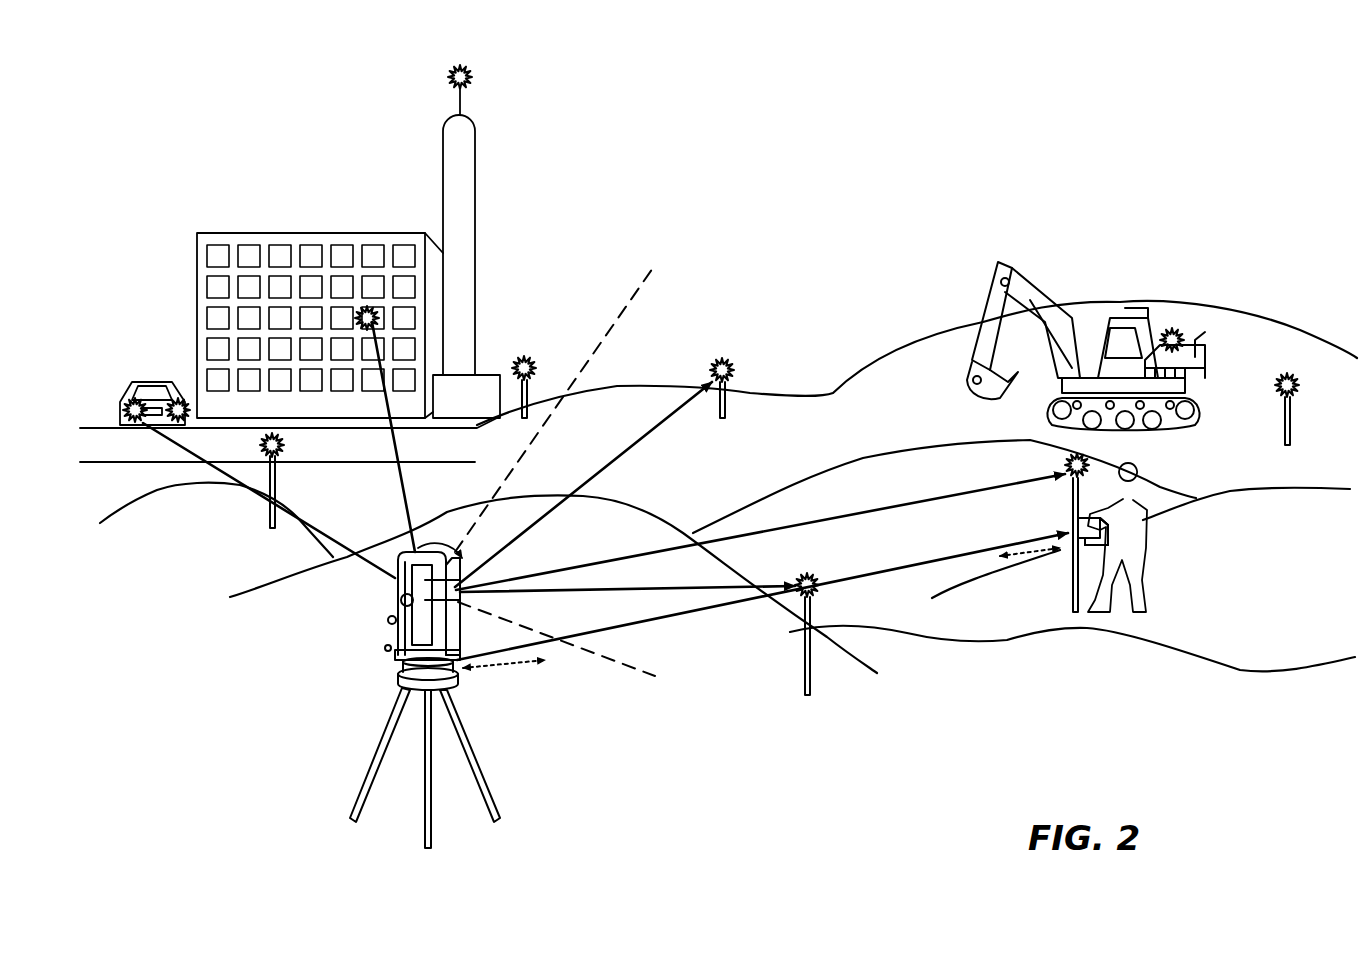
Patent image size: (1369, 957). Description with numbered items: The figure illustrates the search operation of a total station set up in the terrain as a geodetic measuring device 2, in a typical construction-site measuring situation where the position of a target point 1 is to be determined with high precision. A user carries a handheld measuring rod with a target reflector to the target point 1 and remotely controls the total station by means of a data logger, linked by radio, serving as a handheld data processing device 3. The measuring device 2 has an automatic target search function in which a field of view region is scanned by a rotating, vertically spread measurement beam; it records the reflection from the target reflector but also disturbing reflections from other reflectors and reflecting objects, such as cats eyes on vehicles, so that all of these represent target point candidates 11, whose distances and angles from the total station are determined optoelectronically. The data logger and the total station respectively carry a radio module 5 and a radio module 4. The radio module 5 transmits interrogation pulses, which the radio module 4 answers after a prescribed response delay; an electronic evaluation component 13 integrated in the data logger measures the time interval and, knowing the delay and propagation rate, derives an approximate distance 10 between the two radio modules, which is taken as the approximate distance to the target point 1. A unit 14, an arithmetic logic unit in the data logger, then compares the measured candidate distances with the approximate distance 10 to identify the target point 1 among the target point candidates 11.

The target point 1 is at (1083, 462).
The geodetic measuring device 2 is at (323, 657).
The handheld data processing device 3 is at (1075, 528).
The radio module 4 is at (450, 680).
The radio module 5 is at (1083, 545).
The approximate distance 10 is at (688, 617).
The target point candidates 11 is at (143, 423).
The electronic evaluation component 13 is at (1087, 532).
The unit 14 is at (1087, 532).